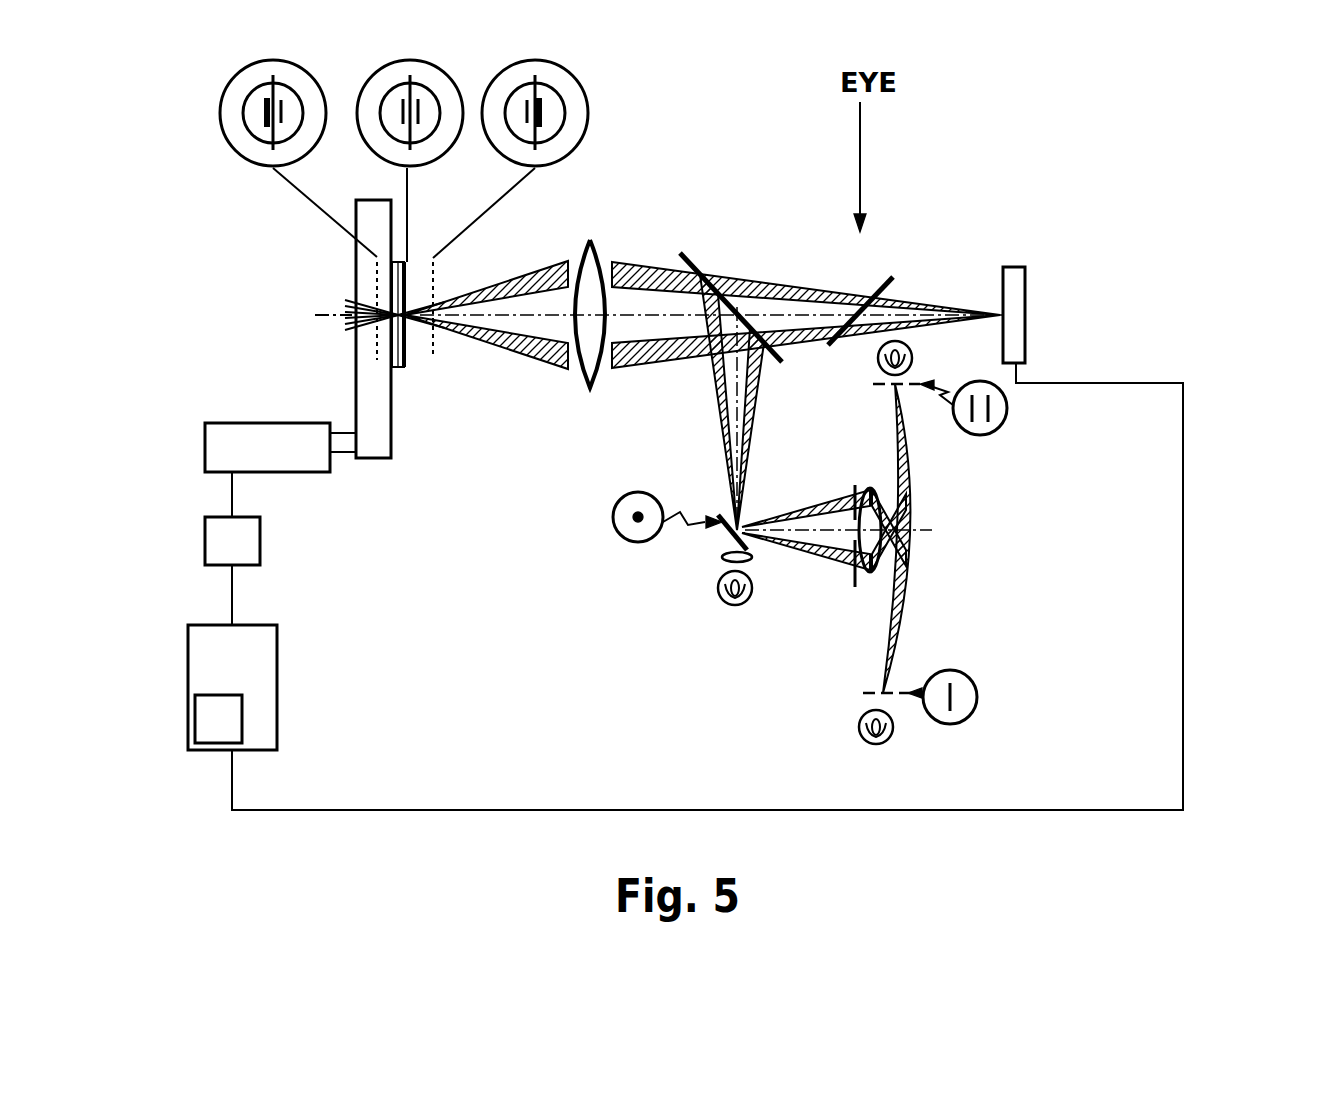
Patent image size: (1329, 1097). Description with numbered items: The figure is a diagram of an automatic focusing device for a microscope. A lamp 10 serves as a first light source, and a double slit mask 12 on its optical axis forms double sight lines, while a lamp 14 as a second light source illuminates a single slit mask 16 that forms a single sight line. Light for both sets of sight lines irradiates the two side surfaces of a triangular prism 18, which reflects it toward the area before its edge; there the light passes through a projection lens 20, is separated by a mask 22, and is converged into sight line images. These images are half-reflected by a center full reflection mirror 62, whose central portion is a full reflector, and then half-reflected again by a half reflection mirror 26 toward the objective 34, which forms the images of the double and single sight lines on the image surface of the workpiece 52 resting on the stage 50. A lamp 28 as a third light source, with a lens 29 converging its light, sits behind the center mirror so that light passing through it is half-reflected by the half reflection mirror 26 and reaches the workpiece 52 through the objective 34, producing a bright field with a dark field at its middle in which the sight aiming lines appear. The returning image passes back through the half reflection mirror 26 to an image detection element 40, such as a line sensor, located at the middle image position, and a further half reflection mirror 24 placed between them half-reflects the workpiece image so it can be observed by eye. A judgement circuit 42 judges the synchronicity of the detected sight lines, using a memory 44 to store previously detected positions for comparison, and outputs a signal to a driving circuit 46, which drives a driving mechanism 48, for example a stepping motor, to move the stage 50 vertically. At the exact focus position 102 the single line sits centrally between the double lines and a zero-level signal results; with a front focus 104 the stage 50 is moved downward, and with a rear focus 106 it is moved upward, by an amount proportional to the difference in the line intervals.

The lamp 10 is at (912, 368).
The double slit mask 12 is at (975, 435).
The lamp 14 is at (882, 744).
The single slit mask 16 is at (970, 718).
The prism 18 is at (912, 522).
The projection lens 20 is at (855, 485).
The mask 22 is at (855, 587).
The half reflection mirror 24 is at (893, 277).
The half reflection mirror 26 is at (685, 253).
The lamp 28 is at (735, 605).
The lens 29 is at (752, 560).
The objective 34 is at (600, 238).
The image detection element 40 is at (1030, 278).
The judgement circuit 42 is at (277, 668).
The memory 44 is at (242, 735).
The driving circuit 46 is at (260, 541).
The driving mechanism 48 is at (213, 423).
The stage 50 is at (372, 458).
The workpiece 52 is at (398, 369).
The center full reflection mirror 62 is at (625, 540).
The exact focus position 102 is at (400, 367).
The front focus 104 is at (433, 355).
The rear focus 106 is at (377, 360).